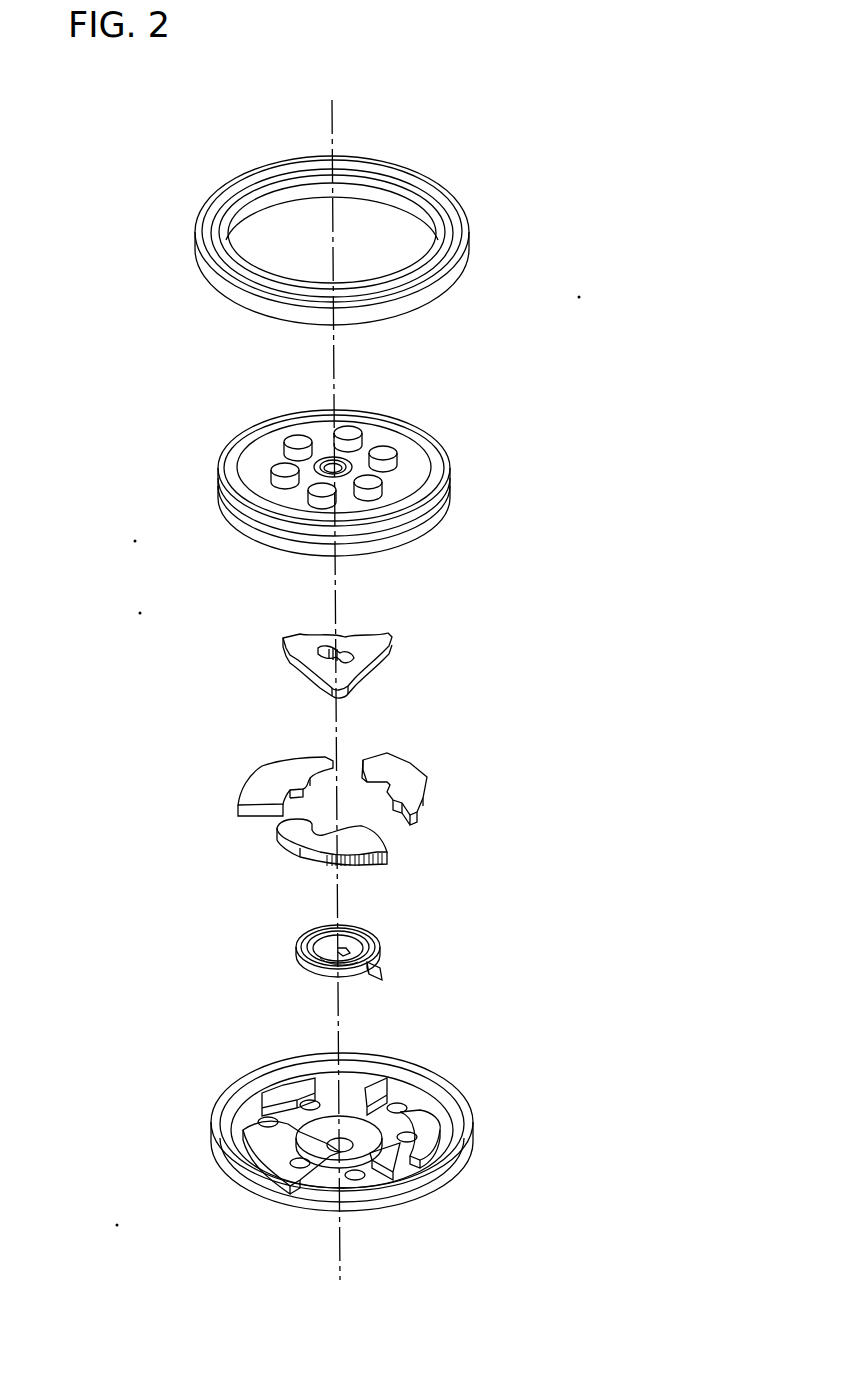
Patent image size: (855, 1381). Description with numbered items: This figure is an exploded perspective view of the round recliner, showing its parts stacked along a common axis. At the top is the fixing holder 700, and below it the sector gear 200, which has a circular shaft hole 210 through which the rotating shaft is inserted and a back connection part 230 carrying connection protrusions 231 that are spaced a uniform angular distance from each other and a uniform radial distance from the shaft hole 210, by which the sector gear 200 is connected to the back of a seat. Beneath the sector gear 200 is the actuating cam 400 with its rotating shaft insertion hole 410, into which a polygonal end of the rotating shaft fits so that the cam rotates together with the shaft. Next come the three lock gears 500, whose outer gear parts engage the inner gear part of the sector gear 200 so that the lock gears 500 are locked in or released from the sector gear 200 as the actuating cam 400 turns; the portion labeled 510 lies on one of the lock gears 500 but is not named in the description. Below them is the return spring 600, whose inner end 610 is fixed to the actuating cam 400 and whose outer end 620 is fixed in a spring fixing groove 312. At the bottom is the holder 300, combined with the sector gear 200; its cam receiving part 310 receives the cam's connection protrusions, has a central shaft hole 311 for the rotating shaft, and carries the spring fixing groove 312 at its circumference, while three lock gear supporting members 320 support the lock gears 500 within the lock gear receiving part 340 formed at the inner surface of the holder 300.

The fixing holder 700 is at (455, 187).
The sector gear 200 is at (453, 467).
The circular shaft hole 210 is at (337, 470).
The back connection part 230 is at (270, 467).
The connection protrusions 231 is at (290, 437).
The actuating cam 400 is at (393, 642).
The rotating shaft insertion hole 410 is at (333, 648).
The lock gears 500 is at (277, 845).
The knurled surface 510 is at (387, 858).
The return spring 600 is at (297, 943).
The inner end 610 is at (345, 953).
The outer end 620 is at (377, 967).
The holder 300 is at (210, 1162).
The cam receiving part 310 is at (353, 1130).
The shaft hole 311 is at (333, 1140).
The spring fixing groove 312 is at (403, 1113).
The lock gear receiving part 340 is at (253, 1113).
The lock gear supporting members 320 is at (430, 1132).